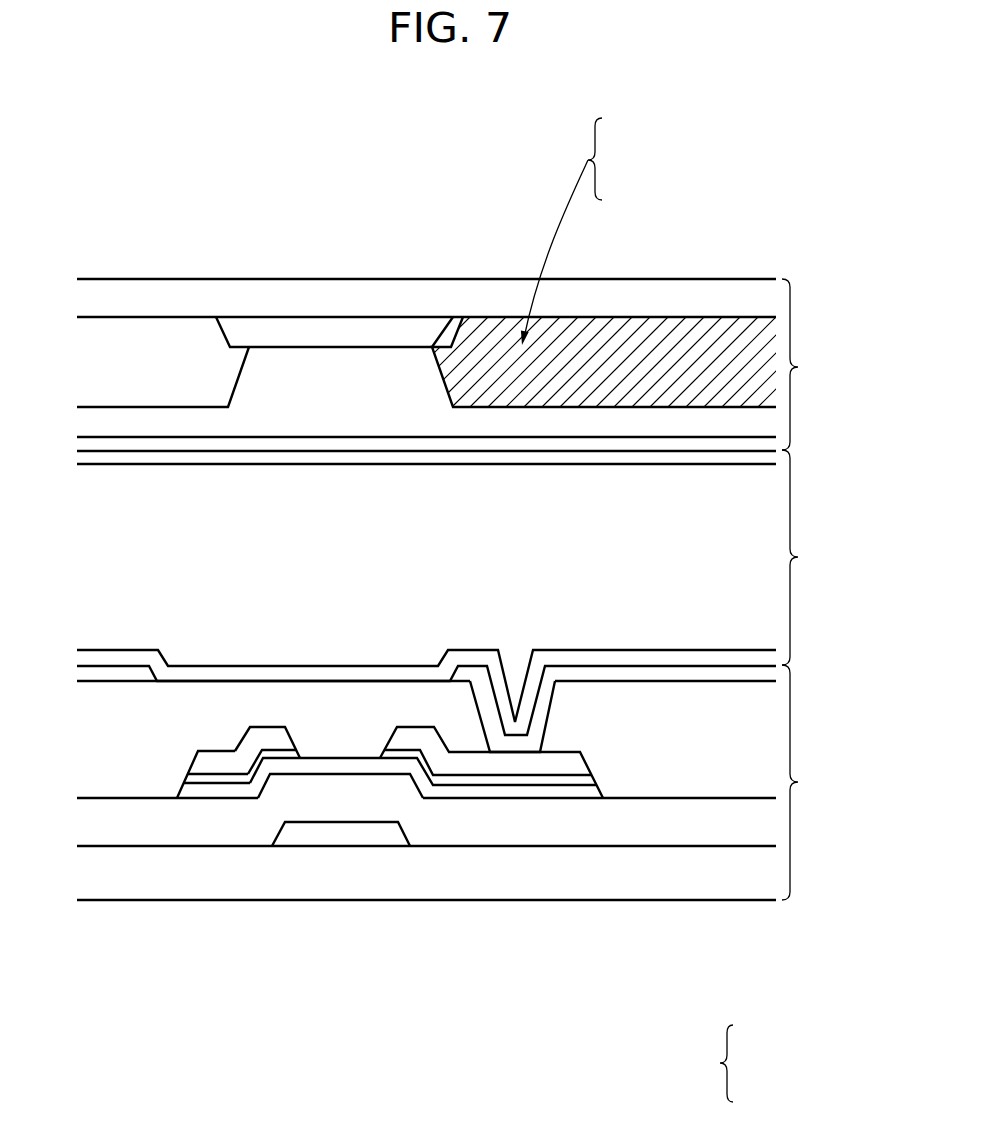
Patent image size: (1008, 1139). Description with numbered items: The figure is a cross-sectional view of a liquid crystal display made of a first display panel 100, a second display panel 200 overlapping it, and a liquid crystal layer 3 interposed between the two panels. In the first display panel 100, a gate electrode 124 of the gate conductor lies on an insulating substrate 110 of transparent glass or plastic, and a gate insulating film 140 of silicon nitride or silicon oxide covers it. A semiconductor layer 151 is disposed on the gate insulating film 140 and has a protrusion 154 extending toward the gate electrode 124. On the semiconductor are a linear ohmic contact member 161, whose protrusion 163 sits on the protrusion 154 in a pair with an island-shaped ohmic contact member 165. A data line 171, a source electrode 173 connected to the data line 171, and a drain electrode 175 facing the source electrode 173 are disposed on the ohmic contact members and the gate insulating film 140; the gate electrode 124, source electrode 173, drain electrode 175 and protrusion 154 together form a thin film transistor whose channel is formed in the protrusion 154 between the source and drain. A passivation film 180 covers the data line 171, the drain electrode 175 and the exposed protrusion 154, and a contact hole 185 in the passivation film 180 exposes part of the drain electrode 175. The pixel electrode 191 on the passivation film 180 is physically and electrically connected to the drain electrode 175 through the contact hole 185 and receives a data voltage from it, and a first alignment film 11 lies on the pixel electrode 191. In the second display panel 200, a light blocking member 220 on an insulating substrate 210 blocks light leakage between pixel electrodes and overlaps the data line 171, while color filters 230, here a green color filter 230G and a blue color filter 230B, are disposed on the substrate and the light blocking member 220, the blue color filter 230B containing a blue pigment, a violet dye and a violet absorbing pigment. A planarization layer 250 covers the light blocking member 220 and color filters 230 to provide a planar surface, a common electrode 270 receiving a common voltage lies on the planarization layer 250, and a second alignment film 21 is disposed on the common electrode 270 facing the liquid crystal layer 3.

The liquid crystal layer 3 is at (805, 557).
The first alignment film 11 is at (712, 660).
The second alignment film 21 is at (762, 457).
The first display panel 100 is at (814, 782).
The insulating substrate 110 is at (480, 882).
The gate electrode 124 is at (345, 830).
The gate insulating film 140 is at (548, 835).
The semiconductor layer 151 is at (192, 793).
The protrusion 154 is at (373, 765).
The linear ohmic contact member 161 is at (242, 782).
The protrusion 163 is at (280, 757).
The island-shaped ohmic contact member 165 is at (400, 750).
The data line 171 is at (205, 767).
The source electrode 173 is at (268, 738).
The drain electrode 175 is at (413, 738).
The passivation film 180 is at (720, 758).
The contact hole 185 is at (545, 707).
The pixel electrode 191 is at (113, 673).
The second display panel 200 is at (814, 364).
The insulating substrate 210 is at (483, 298).
The light blocking member 220 is at (283, 330).
The color filter 230 is at (733, 1063).
The green color filter 230G is at (133, 365).
The blue color filter 230B is at (598, 365).
The planarization layer 250 is at (702, 423).
The common electrode 270 is at (290, 443).